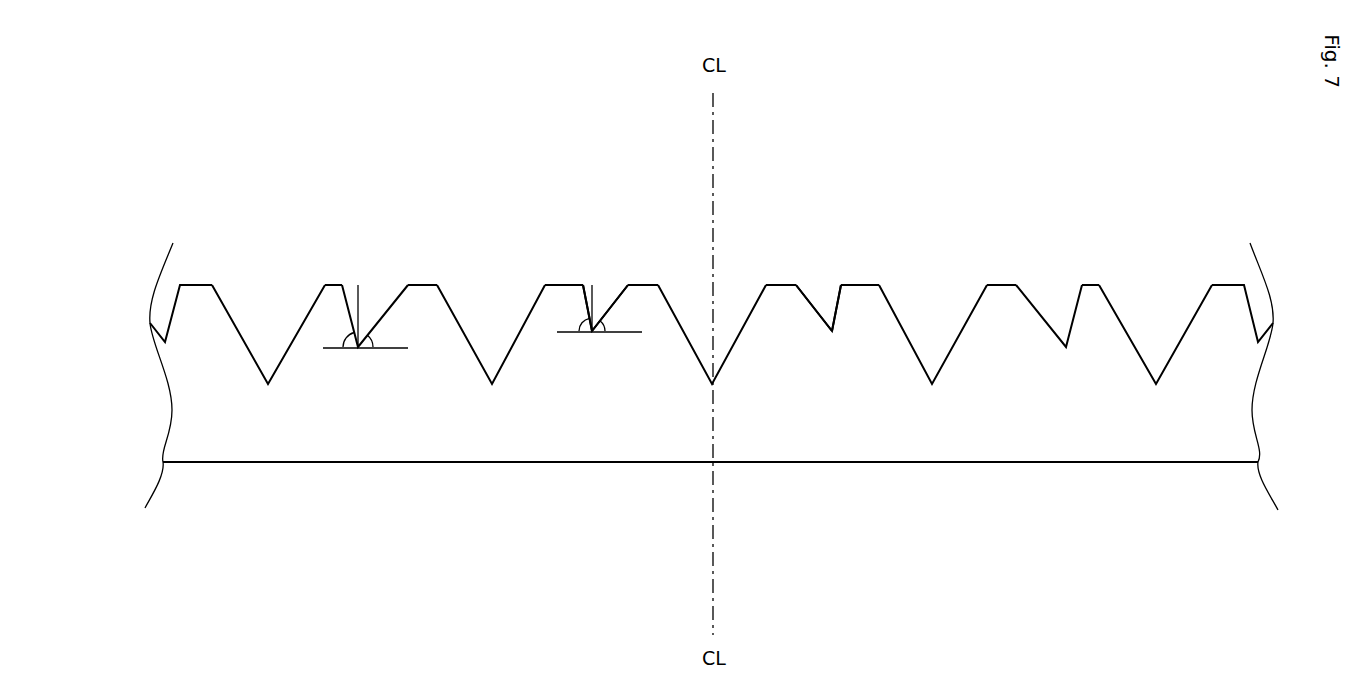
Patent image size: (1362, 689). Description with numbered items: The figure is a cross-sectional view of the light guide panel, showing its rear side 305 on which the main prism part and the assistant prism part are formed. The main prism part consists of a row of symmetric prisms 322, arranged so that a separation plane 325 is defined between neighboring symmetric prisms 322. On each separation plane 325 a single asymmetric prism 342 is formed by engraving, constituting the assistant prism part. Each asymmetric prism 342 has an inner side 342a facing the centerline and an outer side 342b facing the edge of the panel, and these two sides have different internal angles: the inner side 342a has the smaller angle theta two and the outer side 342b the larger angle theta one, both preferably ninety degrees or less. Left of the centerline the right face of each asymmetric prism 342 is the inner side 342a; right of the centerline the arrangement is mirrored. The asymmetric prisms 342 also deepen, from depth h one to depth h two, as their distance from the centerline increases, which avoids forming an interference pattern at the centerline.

The rear side 305 is at (965, 462).
The symmetric prism 322 is at (325, 270).
The separation plane 325 is at (325, 282).
The asymmetric prism 342 is at (410, 278).
The inner side 342a is at (617, 283).
The outer side 342b is at (585, 283).